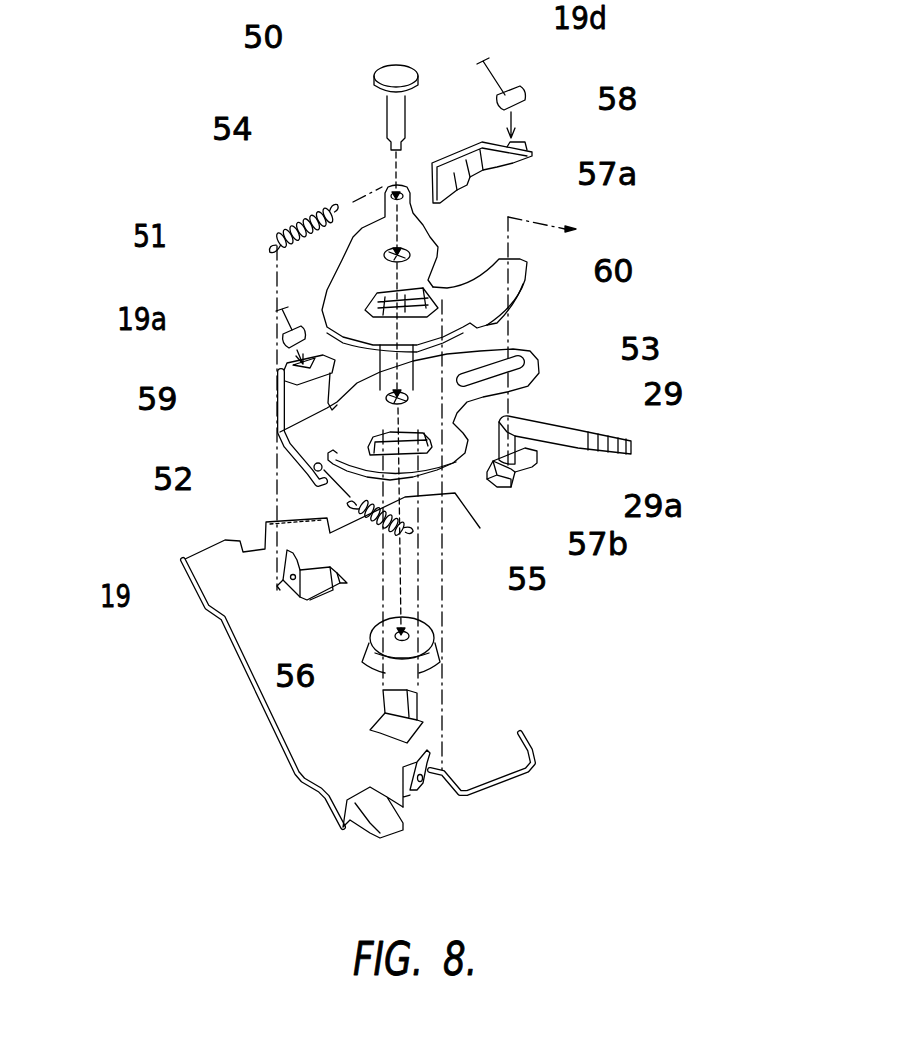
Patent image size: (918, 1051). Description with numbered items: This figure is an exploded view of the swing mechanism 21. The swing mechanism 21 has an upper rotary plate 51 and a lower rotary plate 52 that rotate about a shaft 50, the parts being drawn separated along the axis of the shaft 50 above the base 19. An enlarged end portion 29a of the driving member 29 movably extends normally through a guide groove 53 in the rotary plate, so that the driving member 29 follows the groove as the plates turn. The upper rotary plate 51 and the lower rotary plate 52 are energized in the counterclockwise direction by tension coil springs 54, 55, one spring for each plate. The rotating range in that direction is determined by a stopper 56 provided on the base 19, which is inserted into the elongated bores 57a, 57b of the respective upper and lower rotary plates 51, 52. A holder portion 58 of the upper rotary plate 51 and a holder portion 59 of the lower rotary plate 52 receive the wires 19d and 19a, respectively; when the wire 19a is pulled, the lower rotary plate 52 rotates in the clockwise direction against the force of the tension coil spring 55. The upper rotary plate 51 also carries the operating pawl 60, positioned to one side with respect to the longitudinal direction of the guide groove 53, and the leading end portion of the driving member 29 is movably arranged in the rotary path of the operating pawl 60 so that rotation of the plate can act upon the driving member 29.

The base 19 is at (220, 577).
The wire 19a is at (277, 322).
The wire 19d is at (500, 73).
The swing mechanism 21 is at (200, 188).
The driving member 29 is at (553, 427).
The enlarged end portion 29a is at (530, 468).
The shaft 50 is at (389, 76).
The upper rotary plate 51 is at (173, 238).
The lower rotary plate 52 is at (193, 475).
The guide groove 53 is at (507, 363).
The tension coil spring 54 is at (298, 222).
The tension coil spring 55 is at (400, 520).
The stopper 56 is at (393, 703).
The elongated bore 57a is at (427, 297).
The elongated bore 57b is at (432, 448).
The holder portion 58 is at (530, 145).
The holder portion 59 is at (290, 385).
The operating pawl 60 is at (505, 283).